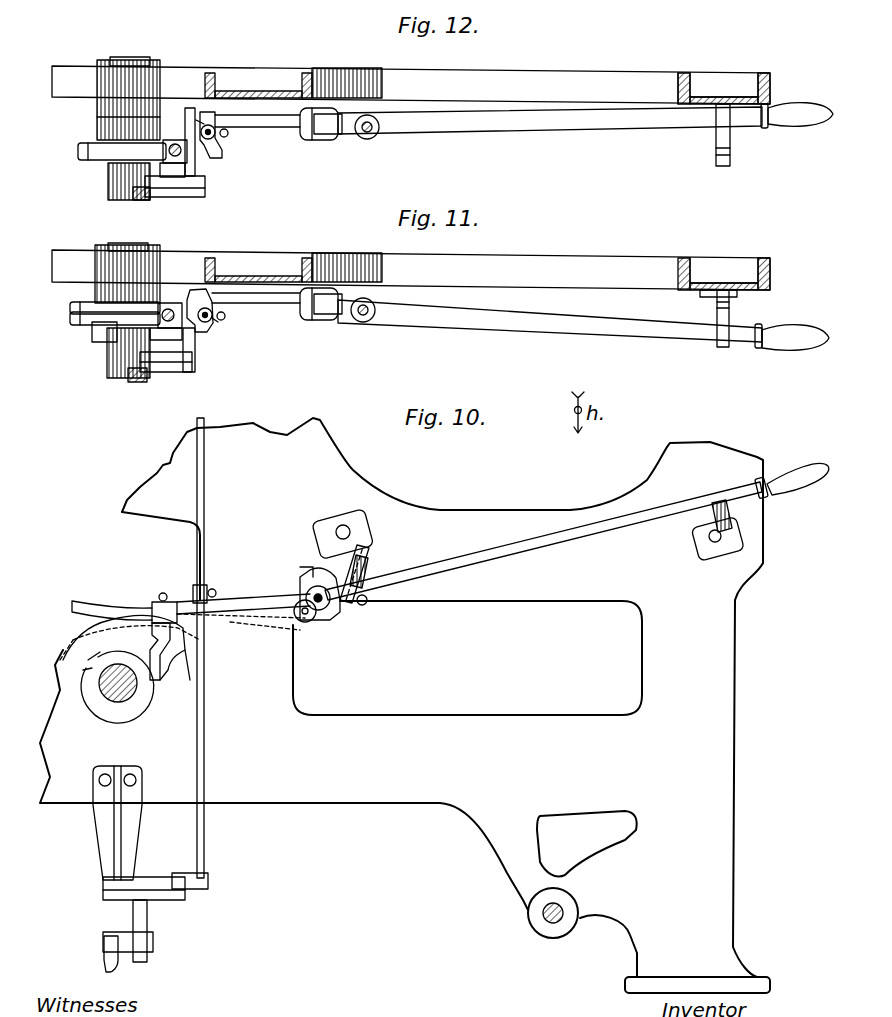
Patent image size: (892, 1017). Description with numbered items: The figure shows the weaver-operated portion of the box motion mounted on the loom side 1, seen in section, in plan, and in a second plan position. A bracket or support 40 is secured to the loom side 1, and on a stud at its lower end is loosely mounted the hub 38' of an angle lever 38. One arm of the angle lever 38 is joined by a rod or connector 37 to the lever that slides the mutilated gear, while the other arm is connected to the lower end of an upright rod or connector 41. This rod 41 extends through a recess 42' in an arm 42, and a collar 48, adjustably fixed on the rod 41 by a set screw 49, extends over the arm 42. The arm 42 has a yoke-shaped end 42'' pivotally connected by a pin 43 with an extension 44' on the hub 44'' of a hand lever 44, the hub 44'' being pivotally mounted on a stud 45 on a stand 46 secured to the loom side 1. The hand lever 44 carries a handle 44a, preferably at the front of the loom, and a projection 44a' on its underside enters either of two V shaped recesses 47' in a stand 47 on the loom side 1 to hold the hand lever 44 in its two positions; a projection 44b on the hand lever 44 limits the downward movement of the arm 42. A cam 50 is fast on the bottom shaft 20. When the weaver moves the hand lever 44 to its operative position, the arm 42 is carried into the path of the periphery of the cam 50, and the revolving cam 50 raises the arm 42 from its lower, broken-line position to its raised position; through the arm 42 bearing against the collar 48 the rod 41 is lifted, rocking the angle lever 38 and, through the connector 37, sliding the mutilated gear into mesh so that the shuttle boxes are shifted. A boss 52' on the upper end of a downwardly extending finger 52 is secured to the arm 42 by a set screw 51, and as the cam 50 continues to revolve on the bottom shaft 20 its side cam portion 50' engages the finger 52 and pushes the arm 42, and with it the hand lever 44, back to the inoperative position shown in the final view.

In FIG. 12, the loom side 1 is at (172, 76).
In FIG. 11, the loom side 1 is at (180, 268).
In FIG. 10, the loom side 1 is at (356, 475).
In FIG. 12, the bottom shaft 20 is at (113, 192).
In FIG. 11, the bottom shaft 20 is at (113, 368).
In FIG. 10, the bottom shaft 20 is at (110, 696).
In FIG. 10, the rod or connector 37 is at (110, 955).
In FIG. 12, the angle lever 38 is at (209, 105).
In FIG. 11, the angle lever 38 is at (206, 353).
In FIG. 10, the angle lever 38 is at (141, 931).
In FIG. 12, the hub of angle lever 38' is at (175, 198).
In FIG. 11, the hub of angle lever 38' is at (166, 383).
In FIG. 10, the hub of angle lever 38' is at (155, 872).
In FIG. 10, the bracket or support 40 is at (116, 826).
In FIG. 12, the rod or connector 41 is at (214, 126).
In FIG. 11, the rod or connector 41 is at (218, 322).
In FIG. 10, the rod or connector 41 is at (206, 477).
In FIG. 12, the arm 42 is at (180, 153).
In FIG. 11, the arm 42 is at (176, 324).
In FIG. 10, the arm 42 is at (173, 594).
In FIG. 12, the recess 42' is at (225, 143).
In FIG. 11, the recess 42' is at (221, 279).
In FIG. 12, the yoke-shaped end 42'' is at (319, 142).
In FIG. 11, the yoke-shaped end 42'' is at (319, 324).
In FIG. 10, the yoke-shaped end 42'' is at (314, 578).
In FIG. 10, the pin 43 is at (322, 612).
In FIG. 12, the hand lever 44 is at (550, 136).
In FIG. 11, the hand lever 44 is at (550, 330).
In FIG. 10, the hand lever 44 is at (543, 541).
In FIG. 12, the extension 44' is at (337, 140).
In FIG. 11, the extension 44' is at (336, 324).
In FIG. 10, the extension 44' is at (354, 587).
In FIG. 10, the hub 44'' is at (380, 571).
In FIG. 12, the handle 44a is at (797, 130).
In FIG. 11, the handle 44a is at (792, 352).
In FIG. 10, the handle 44a is at (792, 471).
In FIG. 10, the projection 44a' is at (742, 516).
In FIG. 10, the projection 44b is at (300, 618).
In FIG. 12, the stud 45 is at (370, 137).
In FIG. 11, the stud 45 is at (366, 322).
In FIG. 10, the stud 45 is at (365, 604).
In FIG. 10, the stand 46 is at (365, 545).
In FIG. 12, the stand 47 is at (703, 135).
In FIG. 11, the stand 47 is at (704, 331).
In FIG. 10, the stand 47 is at (710, 547).
In FIG. 12, the V shaped recesses 47' is at (703, 167).
In FIG. 11, the V shaped recesses 47' is at (712, 308).
In FIG. 12, the collar 48 is at (212, 126).
In FIG. 11, the collar 48 is at (208, 325).
In FIG. 10, the collar 48 is at (205, 585).
In FIG. 12, the set screw 49 is at (228, 136).
In FIG. 11, the set screw 49 is at (225, 316).
In FIG. 10, the set screw 49 is at (216, 590).
In FIG. 12, the cam 50 is at (104, 109).
In FIG. 11, the cam 50 is at (100, 290).
In FIG. 10, the cam 50 is at (119, 648).
In FIG. 11, the side cam portion 50' is at (83, 350).
In FIG. 10, the side cam portion 50' is at (98, 687).
In FIG. 12, the set screw 51 is at (185, 155).
In FIG. 11, the set screw 51 is at (178, 304).
In FIG. 10, the set screw 51 is at (162, 593).
In FIG. 12, the finger 52 is at (138, 204).
In FIG. 11, the finger 52 is at (125, 386).
In FIG. 10, the finger 52 is at (168, 662).
In FIG. 12, the boss 52' is at (200, 182).
In FIG. 11, the boss 52' is at (150, 374).
In FIG. 10, the boss 52' is at (145, 603).